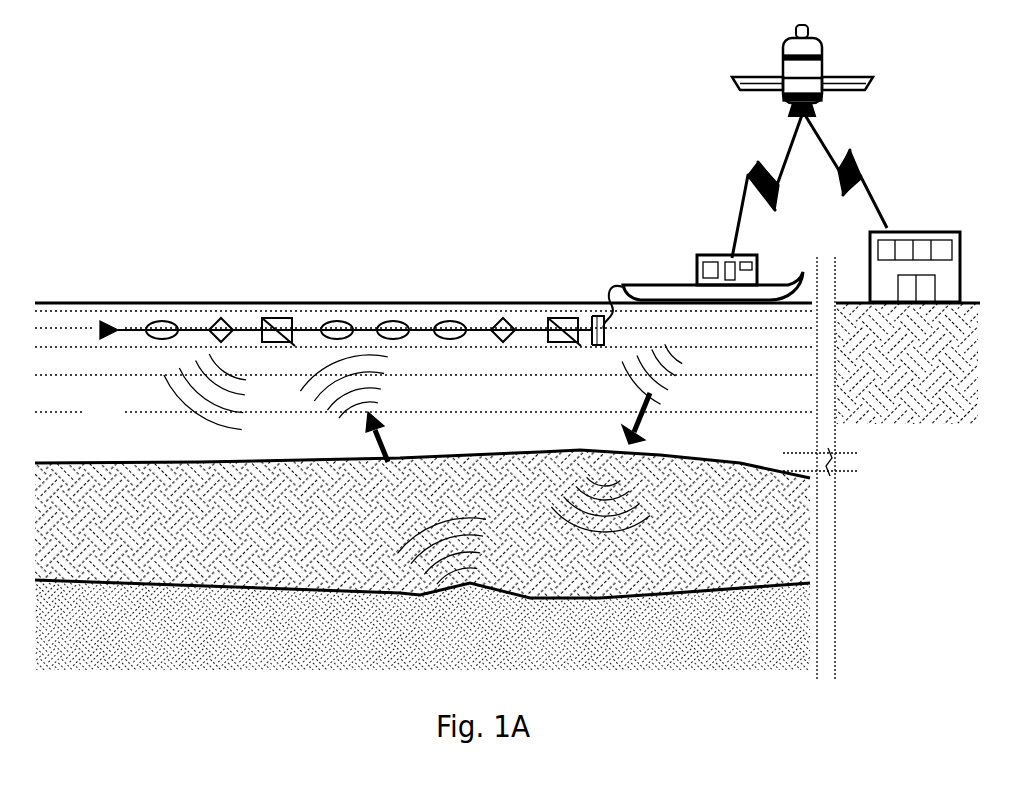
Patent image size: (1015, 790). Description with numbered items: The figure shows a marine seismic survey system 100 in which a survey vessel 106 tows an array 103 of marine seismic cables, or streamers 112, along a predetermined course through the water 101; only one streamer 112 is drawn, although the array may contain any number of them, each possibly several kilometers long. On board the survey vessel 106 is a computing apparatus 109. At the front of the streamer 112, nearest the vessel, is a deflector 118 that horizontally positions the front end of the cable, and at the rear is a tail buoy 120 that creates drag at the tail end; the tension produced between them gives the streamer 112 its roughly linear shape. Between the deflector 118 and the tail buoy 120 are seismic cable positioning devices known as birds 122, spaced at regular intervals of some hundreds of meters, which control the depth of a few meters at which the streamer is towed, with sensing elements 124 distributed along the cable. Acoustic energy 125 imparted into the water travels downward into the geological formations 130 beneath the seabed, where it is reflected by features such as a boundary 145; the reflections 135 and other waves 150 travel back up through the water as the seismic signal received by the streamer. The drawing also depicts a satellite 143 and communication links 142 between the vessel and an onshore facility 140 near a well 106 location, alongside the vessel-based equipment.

The survey system 100 is at (446, 196).
The body of water 101 is at (136, 92).
The towed array 103 is at (146, 220).
The survey vessel 106 is at (788, 270).
The computing apparatus 109 is at (700, 255).
The streamer 112 is at (617, 290).
The deflector 118 is at (607, 334).
The tail buoy 120 is at (108, 318).
The bird 122 is at (565, 316).
The streamer with sensors 124 is at (450, 317).
The downgoing seismic energy 125 is at (618, 398).
The subsurface formation 130 is at (374, 543).
The reflected seismic energy 135 is at (392, 382).
The onshore facility 140 is at (930, 228).
The communication link 142 is at (745, 205).
The satellite 143 is at (734, 84).
The formation boundary 145 is at (668, 585).
The seismic waves in water 150 is at (158, 404).